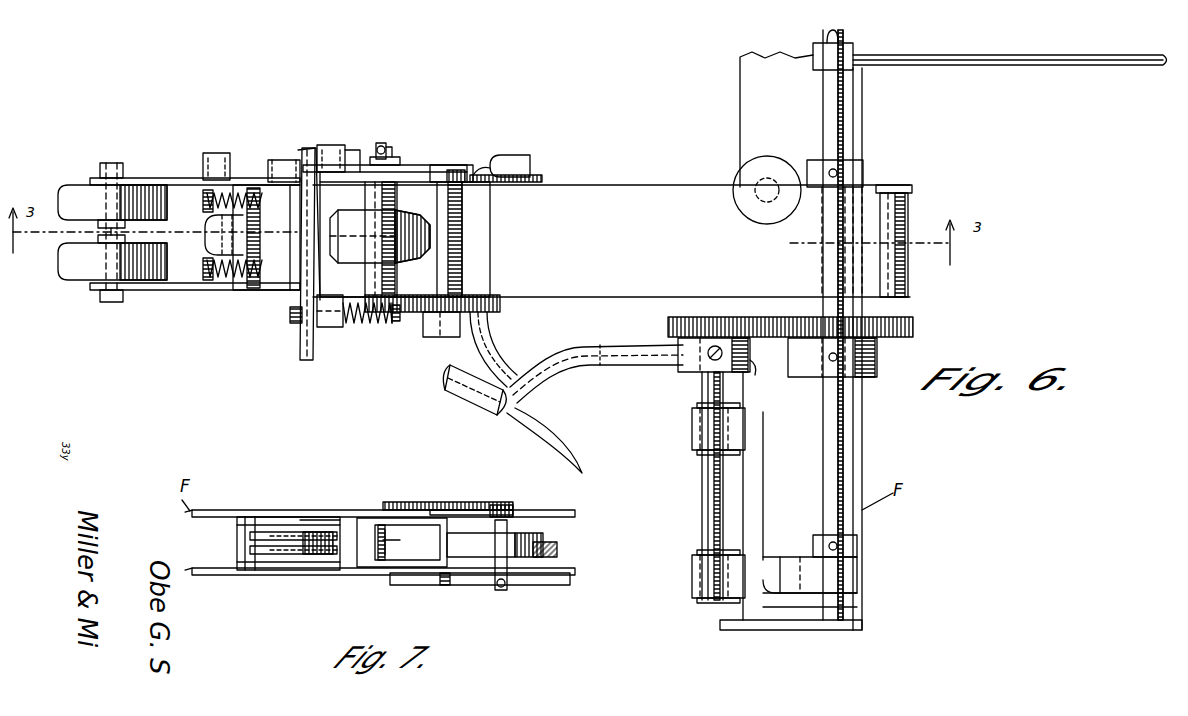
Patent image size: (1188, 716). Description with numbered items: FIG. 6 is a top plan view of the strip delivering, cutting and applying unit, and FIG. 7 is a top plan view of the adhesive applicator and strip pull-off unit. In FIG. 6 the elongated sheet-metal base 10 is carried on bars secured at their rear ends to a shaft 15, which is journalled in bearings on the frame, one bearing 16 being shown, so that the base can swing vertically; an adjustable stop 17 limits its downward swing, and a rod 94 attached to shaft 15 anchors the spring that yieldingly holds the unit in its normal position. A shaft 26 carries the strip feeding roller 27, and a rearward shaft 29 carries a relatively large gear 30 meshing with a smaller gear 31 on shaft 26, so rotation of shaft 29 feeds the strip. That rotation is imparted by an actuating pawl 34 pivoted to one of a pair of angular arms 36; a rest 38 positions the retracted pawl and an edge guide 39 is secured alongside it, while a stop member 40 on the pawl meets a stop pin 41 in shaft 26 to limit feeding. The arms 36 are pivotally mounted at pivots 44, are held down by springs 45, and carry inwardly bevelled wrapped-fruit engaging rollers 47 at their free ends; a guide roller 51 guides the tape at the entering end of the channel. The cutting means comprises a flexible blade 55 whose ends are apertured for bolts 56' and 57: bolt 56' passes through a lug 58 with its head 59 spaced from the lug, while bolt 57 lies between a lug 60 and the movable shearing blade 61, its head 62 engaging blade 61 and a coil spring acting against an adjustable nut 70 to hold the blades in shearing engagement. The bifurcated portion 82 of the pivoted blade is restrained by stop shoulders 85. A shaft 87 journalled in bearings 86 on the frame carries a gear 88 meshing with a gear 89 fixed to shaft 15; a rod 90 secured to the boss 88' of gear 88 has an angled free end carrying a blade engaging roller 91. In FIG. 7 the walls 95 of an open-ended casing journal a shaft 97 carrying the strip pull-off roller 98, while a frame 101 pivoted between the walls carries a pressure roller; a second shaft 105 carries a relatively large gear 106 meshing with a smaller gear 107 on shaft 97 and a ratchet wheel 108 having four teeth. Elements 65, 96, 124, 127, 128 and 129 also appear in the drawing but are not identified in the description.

In FIG. 6, the base 10 is at (622, 185).
In FIG. 6, the shaft 15 is at (848, 443).
In FIG. 6, the bearing 16 is at (830, 573).
In FIG. 6, the stop 17 is at (766, 156).
In FIG. 6, the shaft 26 is at (395, 160).
In FIG. 6, the strip feeding roller 27 is at (352, 222).
In FIG. 6, the shaft 29 is at (452, 250).
In FIG. 6, the gear 30 is at (492, 296).
In FIG. 6, the gear 31 is at (396, 290).
In FIG. 6, the actuating pawl 34 is at (447, 165).
In FIG. 6, the angular arms 36 is at (155, 180).
In FIG. 6, the rest 38 is at (522, 163).
In FIG. 6, the edge guide 39 is at (542, 178).
In FIG. 6, the stop member 40 is at (392, 148).
In FIG. 6, the stop pin 41 is at (381, 143).
In FIG. 6, the pivot 44 is at (282, 160).
In FIG. 6, the spring 45 is at (207, 203).
In FIG. 6, the wrapped-fruit engaging roller 47 is at (78, 190).
In FIG. 6, the guide roller 51 is at (908, 210).
In FIG. 6, the blade 55 is at (205, 235).
In FIG. 6, the bolt 56' is at (326, 145).
In FIG. 6, the bolt 57 is at (352, 323).
In FIG. 6, the lug 58 is at (350, 150).
In FIG. 6, the head 59 is at (298, 150).
In FIG. 6, the lug 60 is at (330, 295).
In FIG. 6, the movable shearing blade 61 is at (302, 336).
In FIG. 6, the head 62 is at (290, 314).
In FIG. 6, the spring end 65 is at (372, 323).
In FIG. 6, the adjustable nut 70 is at (396, 321).
In FIG. 6, the bifurcated portion 82 is at (496, 365).
In FIG. 6, the stop shoulders 85 is at (490, 342).
In FIG. 6, the bearings 86 is at (705, 420).
In FIG. 6, the shaft 87 is at (712, 497).
In FIG. 6, the gear 88 is at (686, 338).
In FIG. 6, the boss 88' is at (813, 366).
In FIG. 6, the gear 89 is at (913, 323).
In FIG. 6, the rod 90 is at (631, 357).
In FIG. 6, the blade engaging roller 91 is at (470, 390).
In FIG. 6, the rod 94 is at (1050, 65).
In FIG. 7, the walls 95 is at (545, 528).
In FIG. 7, the bolt 96 is at (540, 565).
In FIG. 7, the shaft 97 is at (500, 575).
In FIG. 7, the strip pull-off roller 98 is at (505, 540).
In FIG. 7, the frame 101 is at (395, 567).
In FIG. 7, the second shaft 105 is at (432, 535).
In FIG. 7, the gear 106 is at (428, 502).
In FIG. 7, the gear 107 is at (500, 505).
In FIG. 7, the ratchet wheel 108 is at (440, 585).
In FIG. 7, the frame 124 is at (283, 570).
In FIG. 7, the bars 127 is at (250, 535).
In FIG. 7, the hatched block 128 is at (316, 532).
In FIG. 7, the frame top 129 is at (262, 522).